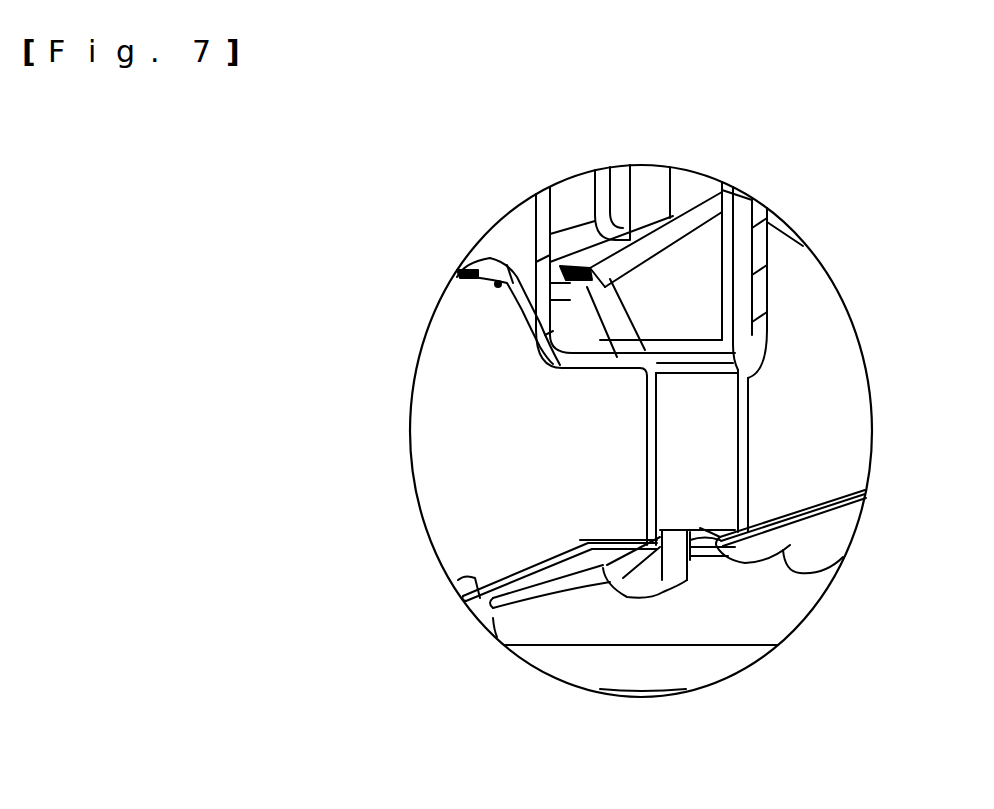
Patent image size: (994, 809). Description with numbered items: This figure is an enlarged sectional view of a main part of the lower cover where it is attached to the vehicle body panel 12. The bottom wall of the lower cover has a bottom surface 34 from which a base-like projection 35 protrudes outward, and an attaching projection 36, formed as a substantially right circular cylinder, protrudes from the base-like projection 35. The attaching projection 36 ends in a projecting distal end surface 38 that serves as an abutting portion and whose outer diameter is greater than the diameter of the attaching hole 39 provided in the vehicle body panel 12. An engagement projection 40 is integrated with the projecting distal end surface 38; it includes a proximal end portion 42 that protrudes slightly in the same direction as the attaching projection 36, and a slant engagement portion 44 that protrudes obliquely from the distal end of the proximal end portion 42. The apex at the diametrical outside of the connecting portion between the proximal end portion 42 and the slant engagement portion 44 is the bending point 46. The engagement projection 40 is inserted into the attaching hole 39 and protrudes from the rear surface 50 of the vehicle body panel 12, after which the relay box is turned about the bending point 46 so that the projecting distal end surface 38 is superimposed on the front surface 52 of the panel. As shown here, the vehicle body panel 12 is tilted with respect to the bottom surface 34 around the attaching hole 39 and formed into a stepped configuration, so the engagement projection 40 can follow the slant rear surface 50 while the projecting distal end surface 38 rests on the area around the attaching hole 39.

The vehicle body panel 12 is at (580, 542).
The bottom surface 34 is at (609, 376).
The base-like projection 35 is at (515, 300).
The attaching projection 36 is at (753, 430).
The projecting distal end surface 38 is at (788, 541).
The attaching hole 39 is at (647, 444).
The engagement projection 40 is at (622, 535).
The proximal end portion 42 is at (689, 558).
The slant engagement portion 44 is at (610, 580).
The bending point 46 is at (638, 540).
The rear surface 50 is at (490, 644).
The front surface 52 is at (458, 580).